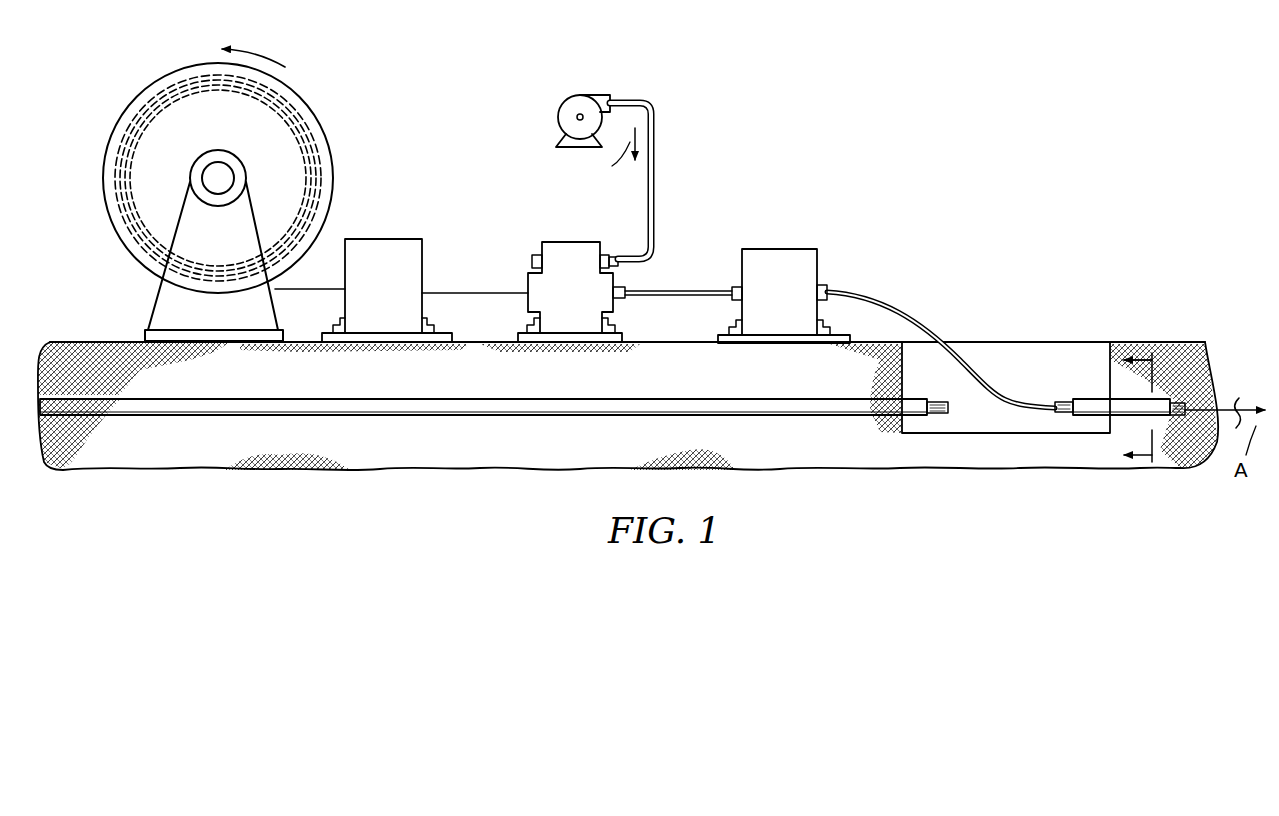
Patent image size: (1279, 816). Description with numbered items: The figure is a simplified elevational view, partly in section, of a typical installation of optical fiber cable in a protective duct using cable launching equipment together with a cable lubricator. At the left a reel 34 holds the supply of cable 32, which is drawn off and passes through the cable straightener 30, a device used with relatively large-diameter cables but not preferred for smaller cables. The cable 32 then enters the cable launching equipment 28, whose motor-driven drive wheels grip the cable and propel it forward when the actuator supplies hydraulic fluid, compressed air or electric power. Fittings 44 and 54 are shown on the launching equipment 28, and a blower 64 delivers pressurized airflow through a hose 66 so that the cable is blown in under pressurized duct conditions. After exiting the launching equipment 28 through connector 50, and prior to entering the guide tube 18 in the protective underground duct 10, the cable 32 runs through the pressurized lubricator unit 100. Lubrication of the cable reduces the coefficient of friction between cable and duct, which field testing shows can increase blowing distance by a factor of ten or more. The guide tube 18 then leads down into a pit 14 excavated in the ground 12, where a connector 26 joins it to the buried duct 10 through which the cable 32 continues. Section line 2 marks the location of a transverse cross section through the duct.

The protective underground duct 10 is at (755, 398).
The ground 12 is at (95, 338).
The pit 14 is at (1012, 445).
The guide tube 18 is at (688, 291).
The connector 26 is at (945, 400).
The cable launching equipment 28 is at (584, 291).
The cable straightener 30 is at (396, 291).
The cable 32 is at (311, 291).
The reel 34 is at (155, 82).
The fitting 44 is at (533, 258).
The connector 50 is at (618, 300).
The fitting 54 is at (601, 256).
The blower 64 is at (586, 93).
The hose 66 is at (654, 160).
The pressurized lubricator unit 100 is at (798, 291).
The section line 2 is at (1147, 412).